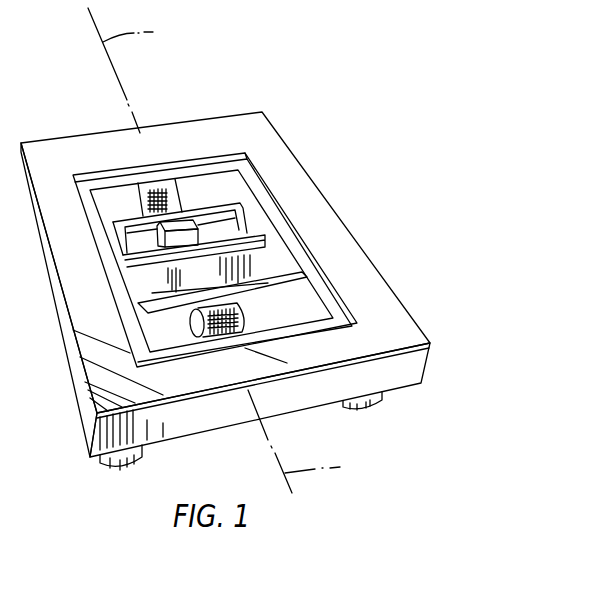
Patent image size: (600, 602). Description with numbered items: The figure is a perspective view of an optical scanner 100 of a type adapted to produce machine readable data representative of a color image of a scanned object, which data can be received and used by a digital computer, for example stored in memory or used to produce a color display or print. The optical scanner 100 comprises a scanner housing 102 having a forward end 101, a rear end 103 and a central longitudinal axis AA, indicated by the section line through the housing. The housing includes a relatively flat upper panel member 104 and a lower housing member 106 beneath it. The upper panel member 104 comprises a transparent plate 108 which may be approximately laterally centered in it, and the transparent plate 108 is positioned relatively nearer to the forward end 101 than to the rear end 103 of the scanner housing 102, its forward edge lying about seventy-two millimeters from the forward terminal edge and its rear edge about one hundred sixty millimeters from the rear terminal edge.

The optical scanner 100 is at (347, 140).
The forward end 101 is at (250, 373).
The scanner housing 102 is at (371, 262).
The rear end 103 is at (133, 145).
The upper panel member 104 is at (393, 325).
The lower housing member 106 is at (407, 370).
The transparent plate 108 is at (203, 195).